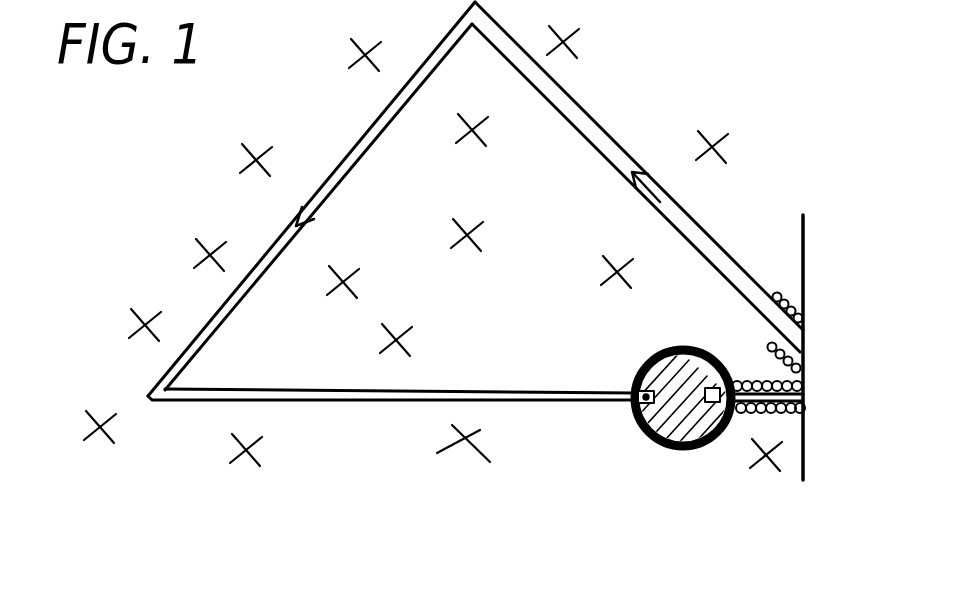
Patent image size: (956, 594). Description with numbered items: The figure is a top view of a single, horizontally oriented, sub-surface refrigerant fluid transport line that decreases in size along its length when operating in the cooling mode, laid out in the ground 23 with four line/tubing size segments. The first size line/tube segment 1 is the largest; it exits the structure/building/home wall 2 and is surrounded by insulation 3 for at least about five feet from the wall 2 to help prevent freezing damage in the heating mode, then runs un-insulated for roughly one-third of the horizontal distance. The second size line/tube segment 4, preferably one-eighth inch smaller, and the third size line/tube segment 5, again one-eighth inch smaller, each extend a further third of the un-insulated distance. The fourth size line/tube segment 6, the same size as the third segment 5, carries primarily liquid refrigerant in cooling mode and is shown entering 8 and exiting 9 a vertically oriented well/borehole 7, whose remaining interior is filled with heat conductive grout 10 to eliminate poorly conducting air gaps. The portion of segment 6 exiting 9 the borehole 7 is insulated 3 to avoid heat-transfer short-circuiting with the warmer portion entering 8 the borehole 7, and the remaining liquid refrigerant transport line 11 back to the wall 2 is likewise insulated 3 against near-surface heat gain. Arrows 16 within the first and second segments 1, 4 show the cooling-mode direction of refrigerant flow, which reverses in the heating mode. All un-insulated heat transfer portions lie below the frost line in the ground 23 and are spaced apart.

The first size line/tube segment 1 is at (593, 133).
The structure/building/home wall 2 is at (806, 283).
The insulation 3 is at (776, 295).
The second size line/tube segment 4 is at (362, 148).
The third size line/tube segment 5 is at (336, 400).
The fourth size line/tube segment 6 is at (650, 380).
The well/borehole 7 is at (636, 423).
The entering (point of fourth segment into well/borehole) 8 is at (641, 380).
The exiting (point of fourth segment from well/borehole) 9 is at (730, 382).
The heat conductive grout 10 is at (678, 413).
The liquid refrigerant transport line 11 is at (757, 408).
The arrows 16 is at (310, 218).
The ground 23 is at (433, 265).